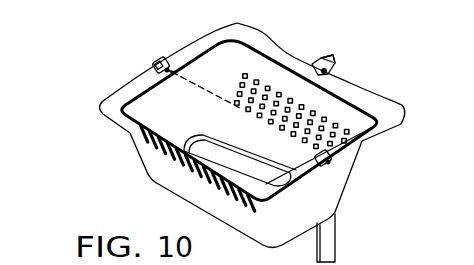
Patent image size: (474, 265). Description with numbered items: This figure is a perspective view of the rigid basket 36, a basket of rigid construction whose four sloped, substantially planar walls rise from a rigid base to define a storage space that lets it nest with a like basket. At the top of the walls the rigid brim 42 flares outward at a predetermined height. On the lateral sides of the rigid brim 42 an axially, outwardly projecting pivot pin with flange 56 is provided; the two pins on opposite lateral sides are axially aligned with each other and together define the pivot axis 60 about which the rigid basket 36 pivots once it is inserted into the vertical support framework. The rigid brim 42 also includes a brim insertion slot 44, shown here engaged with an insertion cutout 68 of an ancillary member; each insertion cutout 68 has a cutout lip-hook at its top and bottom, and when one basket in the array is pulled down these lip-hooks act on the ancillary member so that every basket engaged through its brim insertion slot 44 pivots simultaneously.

The rigid basket 36 is at (175, 47).
The rigid brim 42 is at (386, 101).
The brim insertion slot 44 is at (315, 61).
The pivot pin with flange 56 is at (336, 159).
The pivot axis 60 is at (208, 96).
The insertion cutout 68 is at (334, 68).